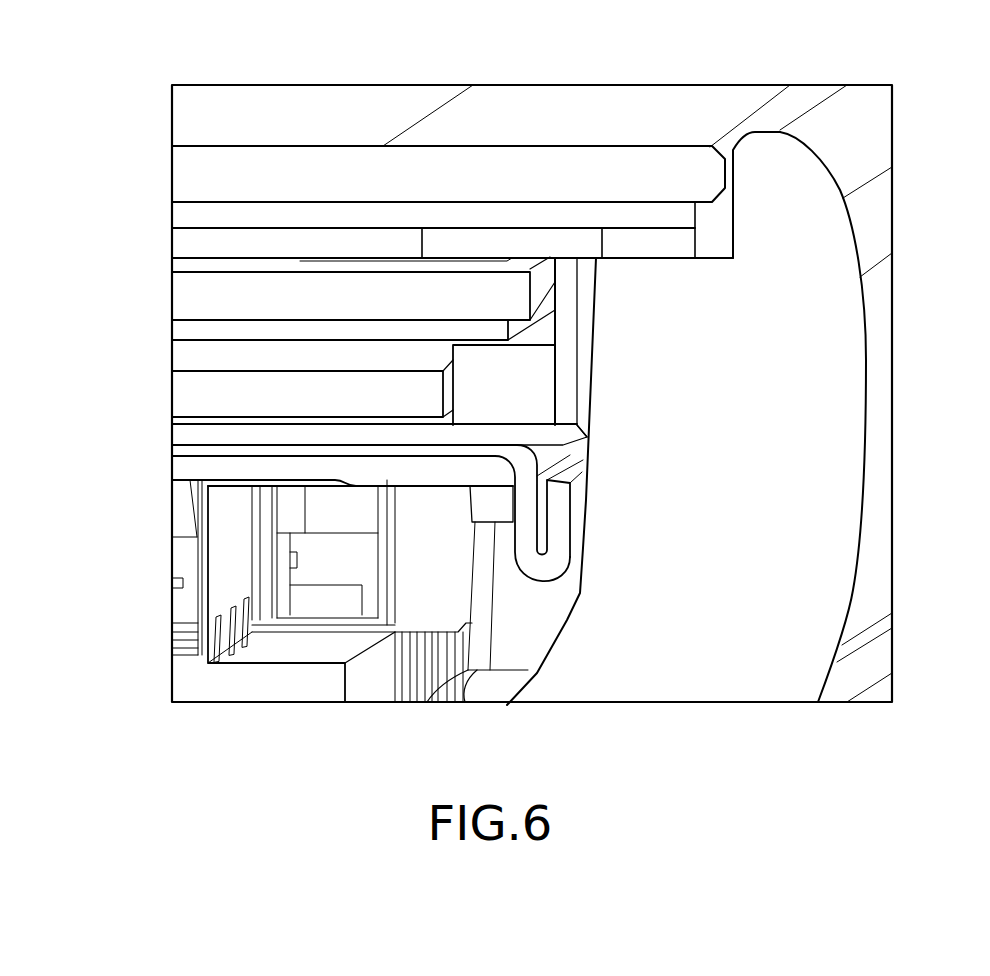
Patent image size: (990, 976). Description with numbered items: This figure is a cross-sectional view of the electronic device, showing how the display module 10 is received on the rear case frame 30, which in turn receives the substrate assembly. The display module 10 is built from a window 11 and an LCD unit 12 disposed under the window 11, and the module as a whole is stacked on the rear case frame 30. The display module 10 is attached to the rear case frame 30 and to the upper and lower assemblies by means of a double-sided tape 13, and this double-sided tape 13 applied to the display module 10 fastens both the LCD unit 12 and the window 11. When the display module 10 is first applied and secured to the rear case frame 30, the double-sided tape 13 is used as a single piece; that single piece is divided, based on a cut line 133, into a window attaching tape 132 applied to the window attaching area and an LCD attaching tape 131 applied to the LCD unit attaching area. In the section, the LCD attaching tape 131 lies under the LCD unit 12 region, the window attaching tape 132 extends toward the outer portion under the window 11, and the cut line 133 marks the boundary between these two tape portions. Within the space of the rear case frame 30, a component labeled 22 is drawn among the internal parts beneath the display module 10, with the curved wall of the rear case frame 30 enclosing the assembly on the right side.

The display module 10 is at (467, 126).
The window 11 is at (337, 163).
The LCD unit 12 is at (190, 283).
The double-sided tape 13 is at (668, 198).
The LCD attaching tape 131 is at (518, 243).
The window attaching tape 132 is at (658, 217).
The cut line 133 is at (602, 242).
The lower structure 22 is at (290, 463).
The rear case frame 30 is at (792, 396).